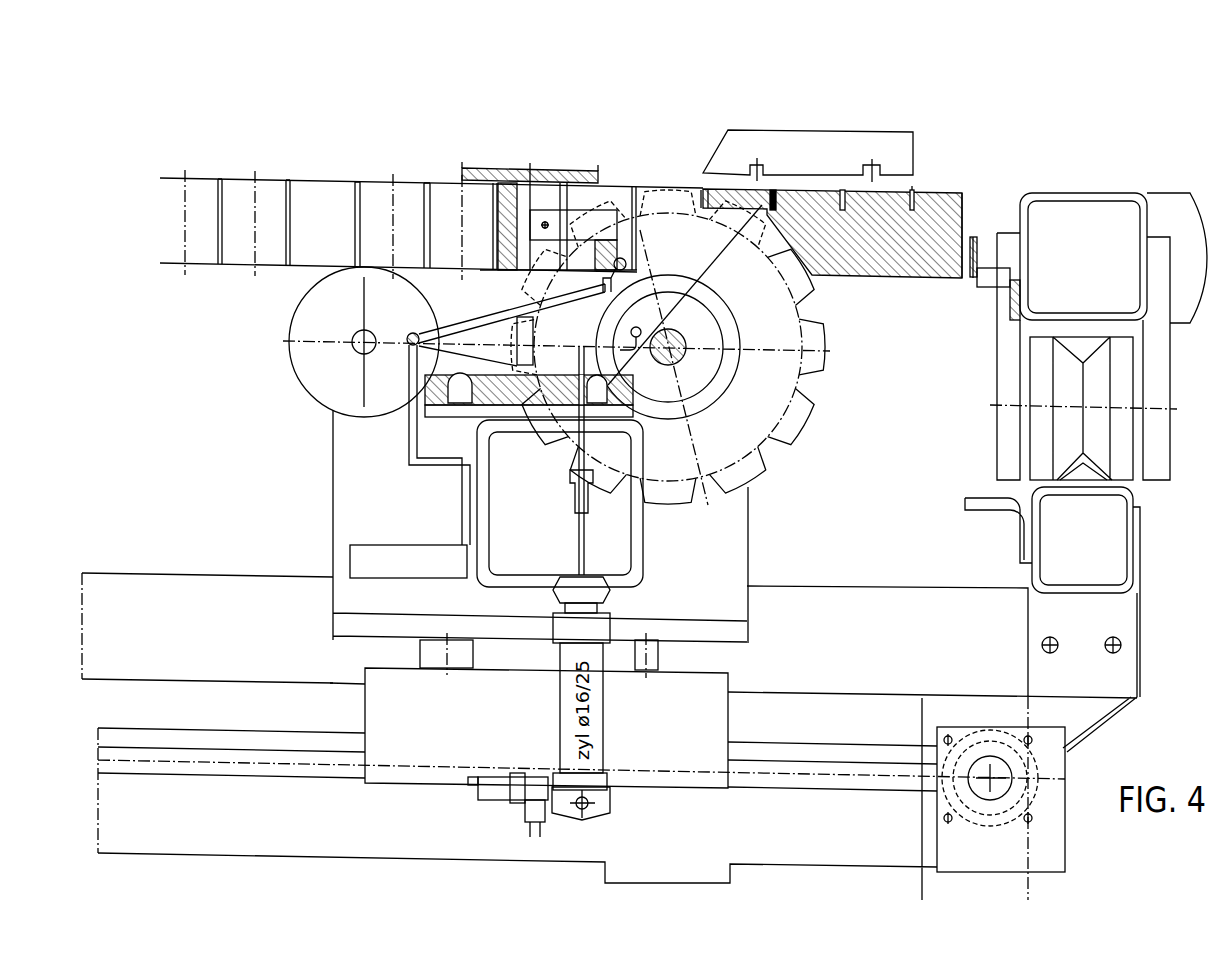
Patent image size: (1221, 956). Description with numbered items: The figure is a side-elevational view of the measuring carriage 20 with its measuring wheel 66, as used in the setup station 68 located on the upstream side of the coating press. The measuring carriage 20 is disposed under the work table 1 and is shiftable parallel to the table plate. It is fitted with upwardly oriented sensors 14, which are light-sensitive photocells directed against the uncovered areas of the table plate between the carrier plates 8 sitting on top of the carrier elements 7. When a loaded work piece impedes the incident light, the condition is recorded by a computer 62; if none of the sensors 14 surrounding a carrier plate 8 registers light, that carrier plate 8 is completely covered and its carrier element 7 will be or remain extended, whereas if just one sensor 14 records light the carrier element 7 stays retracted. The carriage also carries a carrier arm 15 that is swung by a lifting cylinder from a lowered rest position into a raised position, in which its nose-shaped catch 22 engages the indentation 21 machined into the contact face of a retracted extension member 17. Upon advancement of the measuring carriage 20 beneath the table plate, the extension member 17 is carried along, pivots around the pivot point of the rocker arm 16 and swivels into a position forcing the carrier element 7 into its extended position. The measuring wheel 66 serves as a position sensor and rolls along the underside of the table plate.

The work table 1 is at (323, 150).
The carrier element 7 is at (509, 195).
The carrier plate 8 is at (476, 168).
The sensor 14 is at (385, 320).
The carrier arm 15 is at (497, 317).
The rocker arm 16 is at (574, 268).
The extension member 17 is at (608, 238).
The measuring carriage 20 is at (353, 546).
The indentation 21 is at (660, 245).
The nose-shaped catch 22 is at (688, 330).
The computer 62 is at (374, 518).
The measuring wheel 66 is at (773, 247).
The setup station 68 is at (885, 352).